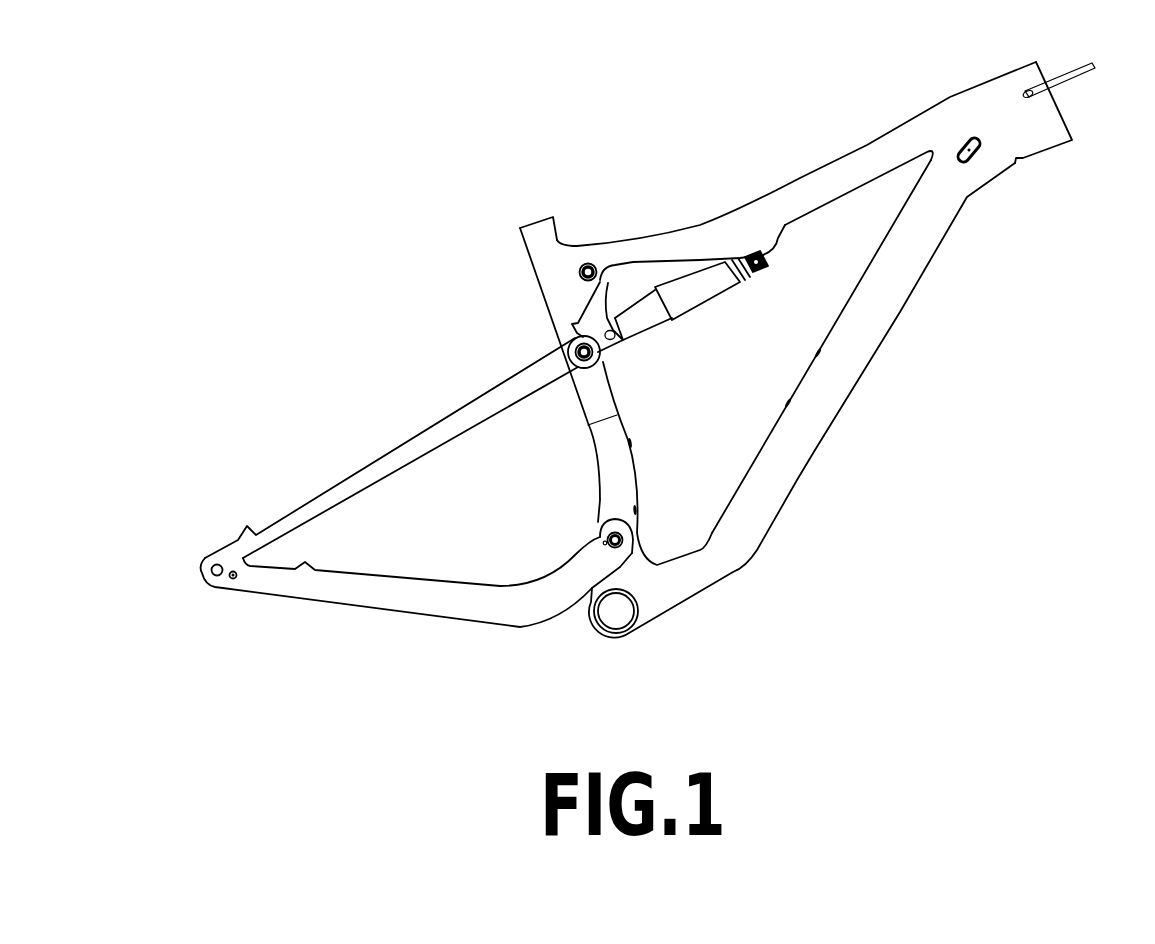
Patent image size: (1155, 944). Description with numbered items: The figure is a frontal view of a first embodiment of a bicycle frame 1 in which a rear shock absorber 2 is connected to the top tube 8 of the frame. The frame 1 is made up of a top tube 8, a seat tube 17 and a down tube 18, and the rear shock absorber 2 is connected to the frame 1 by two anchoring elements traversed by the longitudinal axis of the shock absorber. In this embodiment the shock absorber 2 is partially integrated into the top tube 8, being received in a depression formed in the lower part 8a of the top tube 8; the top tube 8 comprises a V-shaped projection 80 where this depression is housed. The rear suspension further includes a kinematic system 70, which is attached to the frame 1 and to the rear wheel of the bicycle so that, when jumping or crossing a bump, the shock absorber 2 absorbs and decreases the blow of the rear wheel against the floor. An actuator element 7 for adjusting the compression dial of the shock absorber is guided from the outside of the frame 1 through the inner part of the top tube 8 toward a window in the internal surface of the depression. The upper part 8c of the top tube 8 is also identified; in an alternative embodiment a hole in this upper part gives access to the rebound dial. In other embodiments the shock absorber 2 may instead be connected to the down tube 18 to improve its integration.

The frame 1 is at (428, 192).
The rear shock absorber 2 is at (690, 287).
The actuator element 7 is at (1063, 83).
The top tube 8 is at (660, 248).
The lower part of the top tube 8a is at (850, 188).
The upper part of the top tube 8c is at (864, 141).
The V-shaped projection 80 is at (758, 248).
The seat tube 17 is at (618, 472).
The down tube 18 is at (815, 413).
The kinematic system 70 is at (457, 408).